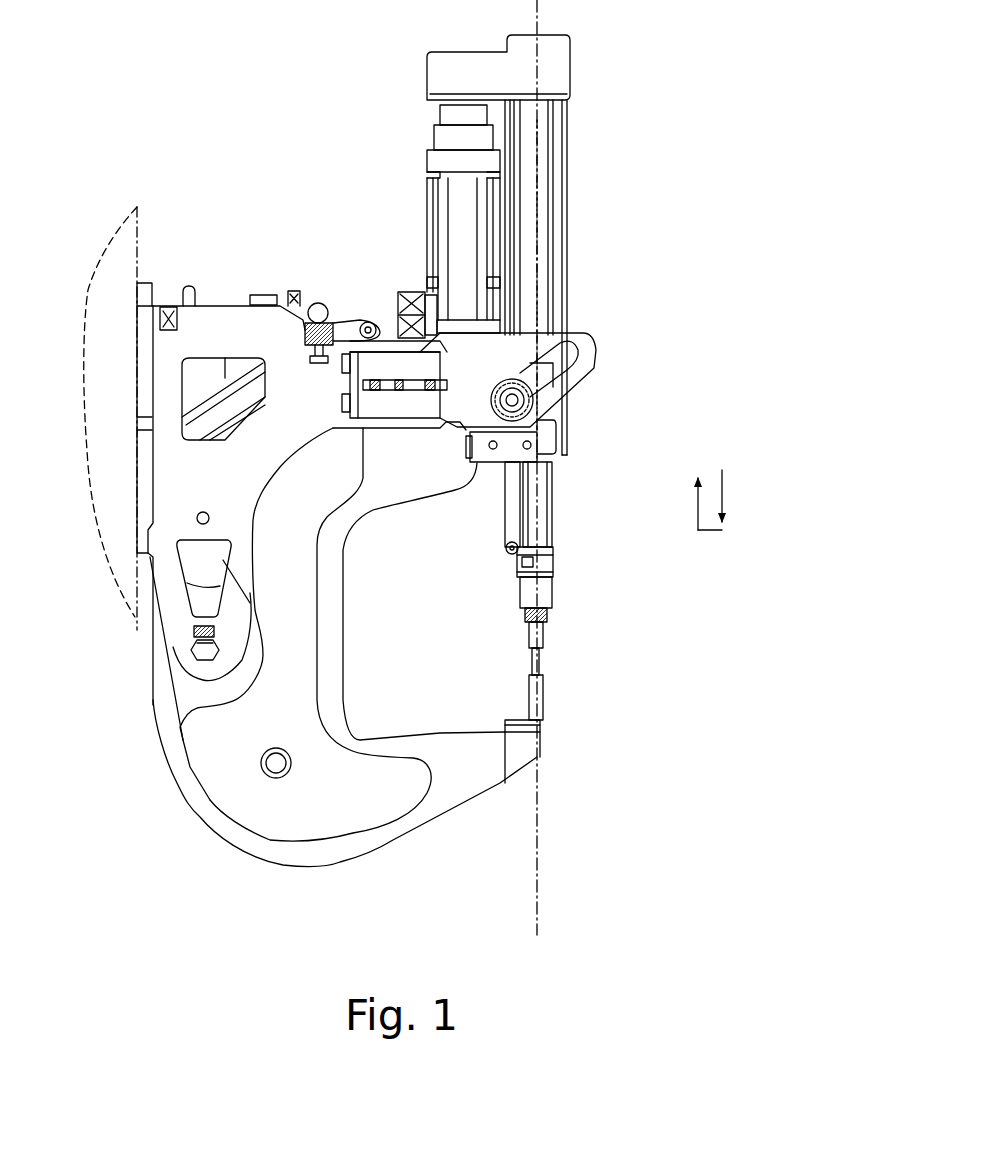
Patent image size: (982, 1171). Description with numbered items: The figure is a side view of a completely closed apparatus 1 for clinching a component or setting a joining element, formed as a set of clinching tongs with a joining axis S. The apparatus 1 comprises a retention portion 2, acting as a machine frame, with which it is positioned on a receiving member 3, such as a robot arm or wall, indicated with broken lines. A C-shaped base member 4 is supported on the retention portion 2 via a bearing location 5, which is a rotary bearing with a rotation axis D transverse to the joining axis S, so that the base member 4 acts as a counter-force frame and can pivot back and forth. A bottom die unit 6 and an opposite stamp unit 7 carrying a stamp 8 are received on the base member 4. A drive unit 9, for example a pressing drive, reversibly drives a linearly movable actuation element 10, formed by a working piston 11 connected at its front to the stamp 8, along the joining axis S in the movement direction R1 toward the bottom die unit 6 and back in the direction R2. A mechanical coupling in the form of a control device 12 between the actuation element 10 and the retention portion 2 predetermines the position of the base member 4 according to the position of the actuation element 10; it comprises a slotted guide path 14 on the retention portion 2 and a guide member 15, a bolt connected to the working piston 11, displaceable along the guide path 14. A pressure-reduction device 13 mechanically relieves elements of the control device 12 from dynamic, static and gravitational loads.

The apparatus 1 is at (652, 200).
The retention portion 2 is at (203, 304).
The receiving member 3 is at (137, 212).
The base member 4 is at (393, 827).
The bearing location 5 is at (188, 660).
The bottom die unit 6 is at (549, 704).
The stamp unit 7 is at (549, 636).
The stamp 8 is at (540, 658).
The drive unit 9 is at (549, 172).
The actuation element 10 is at (555, 478).
The working piston 11 is at (550, 505).
The control device 12 is at (533, 400).
The pressure-reduction device 13 is at (345, 327).
The guide path 14 is at (580, 352).
The guide member 15 is at (553, 420).
The joining axis S is at (537, 237).
The rotation axis D is at (197, 643).
The joining or linear movement direction R1 is at (722, 490).
The return direction R2 is at (700, 530).